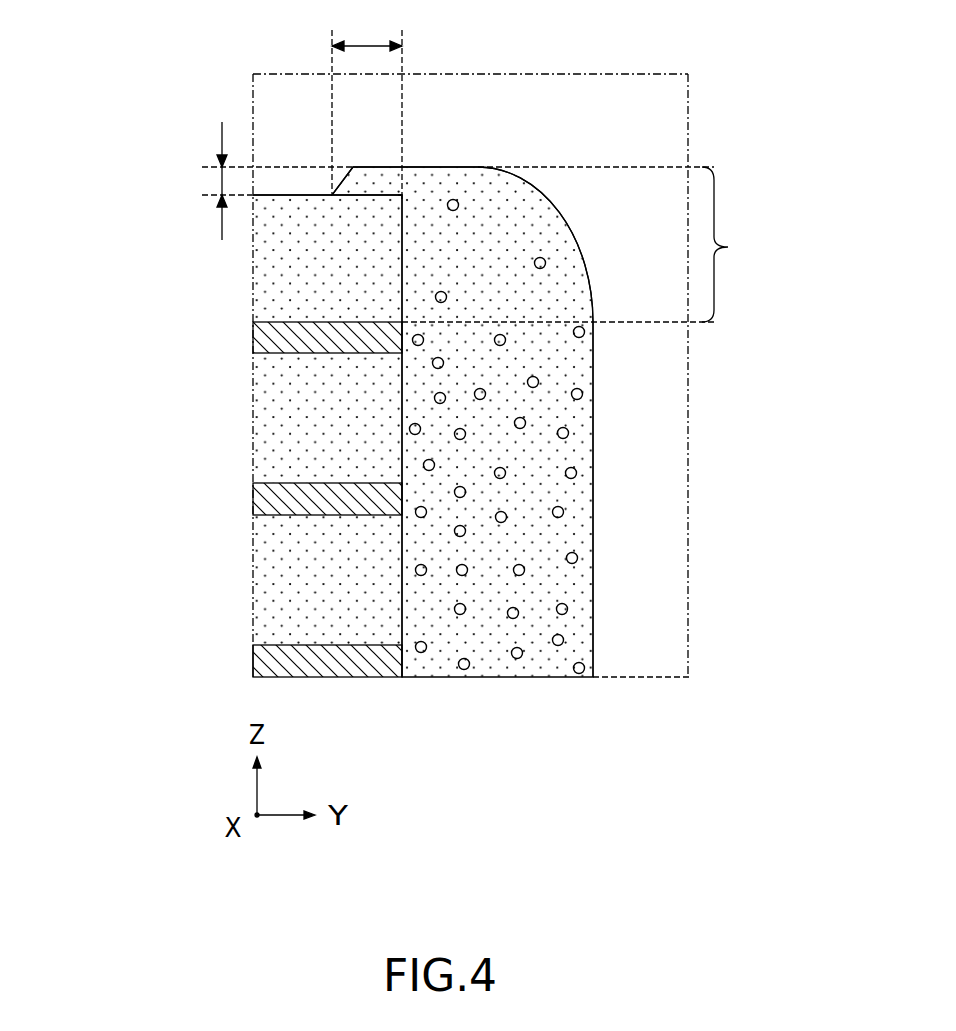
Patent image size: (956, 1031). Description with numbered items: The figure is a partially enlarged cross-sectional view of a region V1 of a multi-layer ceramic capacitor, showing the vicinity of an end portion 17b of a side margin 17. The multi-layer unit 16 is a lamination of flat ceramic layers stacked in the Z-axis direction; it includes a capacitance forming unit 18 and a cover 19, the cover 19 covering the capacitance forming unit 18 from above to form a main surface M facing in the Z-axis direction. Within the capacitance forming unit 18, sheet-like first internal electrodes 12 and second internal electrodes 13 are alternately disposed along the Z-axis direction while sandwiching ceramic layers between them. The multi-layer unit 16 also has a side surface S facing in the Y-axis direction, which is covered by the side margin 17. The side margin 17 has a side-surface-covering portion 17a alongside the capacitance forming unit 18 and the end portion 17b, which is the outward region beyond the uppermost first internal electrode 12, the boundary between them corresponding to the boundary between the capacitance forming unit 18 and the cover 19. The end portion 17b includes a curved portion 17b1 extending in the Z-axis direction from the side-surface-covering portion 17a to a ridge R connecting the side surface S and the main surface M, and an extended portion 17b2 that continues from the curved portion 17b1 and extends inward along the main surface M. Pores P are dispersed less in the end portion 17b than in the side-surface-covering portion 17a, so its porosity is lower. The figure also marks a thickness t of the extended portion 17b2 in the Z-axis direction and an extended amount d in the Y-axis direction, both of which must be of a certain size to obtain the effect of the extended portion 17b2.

The first internal electrode 12 is at (256, 333).
The second internal electrode 13 is at (256, 494).
The multi-layer unit 16 is at (163, 250).
The side margin 17 is at (525, 702).
The side-surface-covering portion 17a is at (658, 402).
The end portion 17b is at (587, 244).
The curved portion 17b1 is at (587, 235).
The extended portion 17b2 is at (365, 180).
The capacitance forming unit 18 is at (322, 457).
The cover 19 is at (318, 274).
The pore P is at (453, 199).
The ridge R is at (404, 194).
The main surface M is at (287, 194).
The side surface S is at (402, 605).
The region V1 is at (480, 74).
The extended amount d is at (367, 99).
The thickness t is at (272, 181).